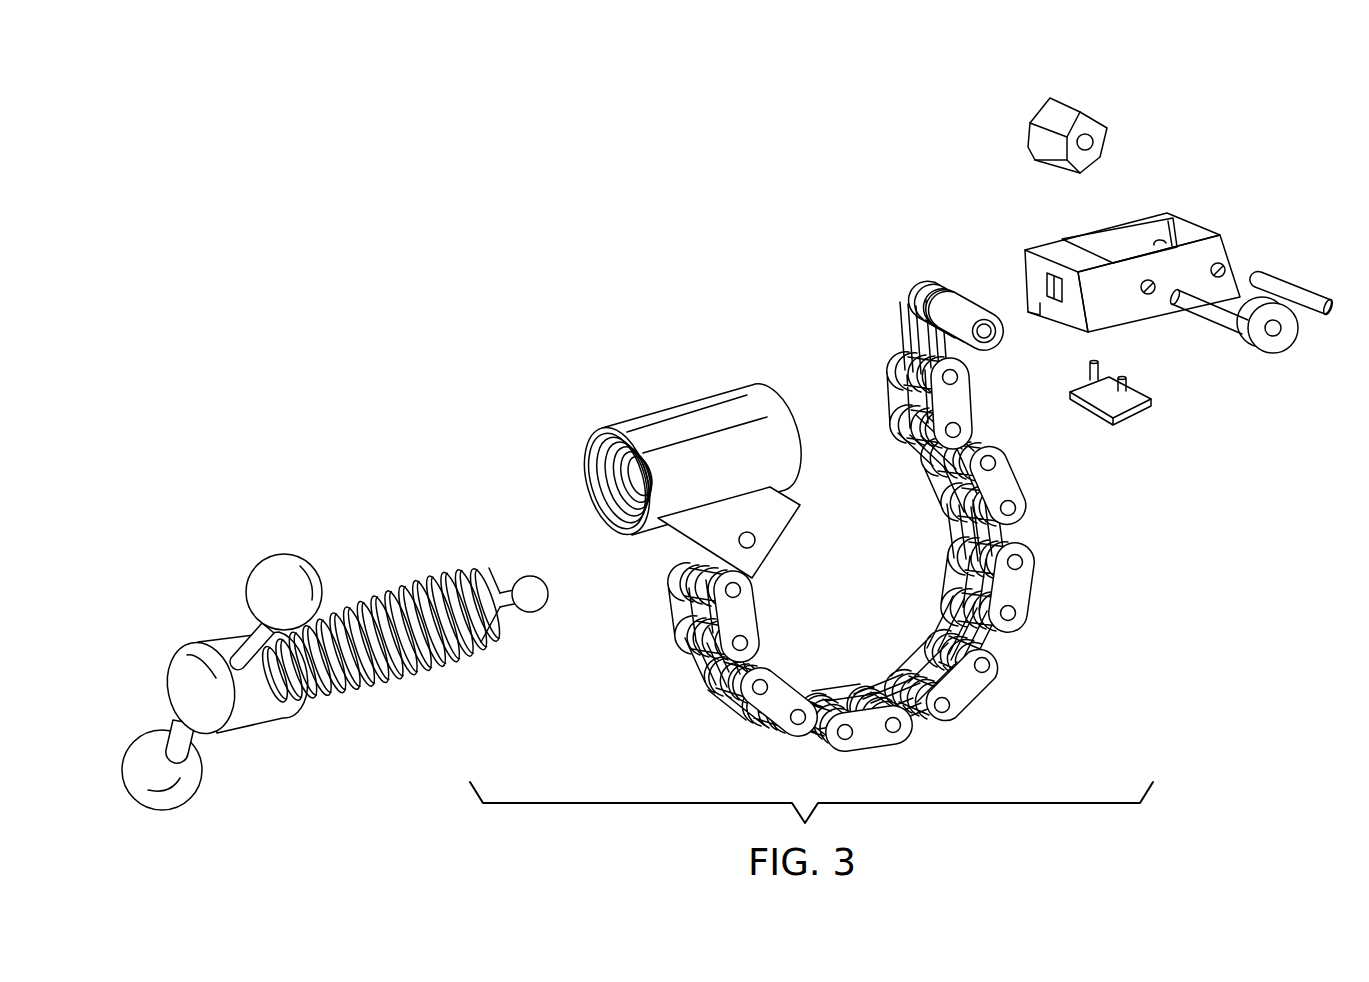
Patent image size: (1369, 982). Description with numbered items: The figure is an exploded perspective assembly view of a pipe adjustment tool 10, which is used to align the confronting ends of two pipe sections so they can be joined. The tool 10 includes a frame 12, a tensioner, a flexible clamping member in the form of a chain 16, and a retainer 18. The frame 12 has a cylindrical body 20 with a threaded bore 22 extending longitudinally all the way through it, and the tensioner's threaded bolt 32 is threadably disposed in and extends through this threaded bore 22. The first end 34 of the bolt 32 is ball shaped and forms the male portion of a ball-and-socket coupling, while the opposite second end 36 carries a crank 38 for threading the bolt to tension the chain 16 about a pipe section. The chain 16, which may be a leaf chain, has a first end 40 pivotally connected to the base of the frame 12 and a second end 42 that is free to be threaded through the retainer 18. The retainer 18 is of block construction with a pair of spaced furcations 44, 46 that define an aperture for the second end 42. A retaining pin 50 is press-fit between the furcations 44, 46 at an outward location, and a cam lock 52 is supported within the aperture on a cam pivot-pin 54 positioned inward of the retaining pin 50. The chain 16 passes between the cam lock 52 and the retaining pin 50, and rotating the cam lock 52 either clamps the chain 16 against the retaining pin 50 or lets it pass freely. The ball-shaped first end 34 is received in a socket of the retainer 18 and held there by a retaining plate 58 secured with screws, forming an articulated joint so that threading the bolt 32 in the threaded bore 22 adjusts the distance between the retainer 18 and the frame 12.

The pipe adjustment tool 10 is at (537, 279).
The frame 12 is at (624, 427).
The chain 16 is at (875, 479).
The retainer 18 is at (1132, 226).
The body 20 is at (670, 420).
The threaded bore 22 is at (583, 472).
The threaded bolt 32 is at (403, 677).
The first end 34 is at (538, 607).
The second end 36 is at (257, 732).
The crank 38 is at (297, 553).
The first end 40 is at (753, 600).
The second end 42 is at (932, 296).
The furcation 44 is at (1237, 240).
The furcation 46 is at (1180, 223).
The retaining pin 50 is at (1290, 287).
The cam lock 52 is at (1084, 99).
The cam pivot-pin 54 is at (1213, 313).
The retaining plate 58 is at (1136, 414).